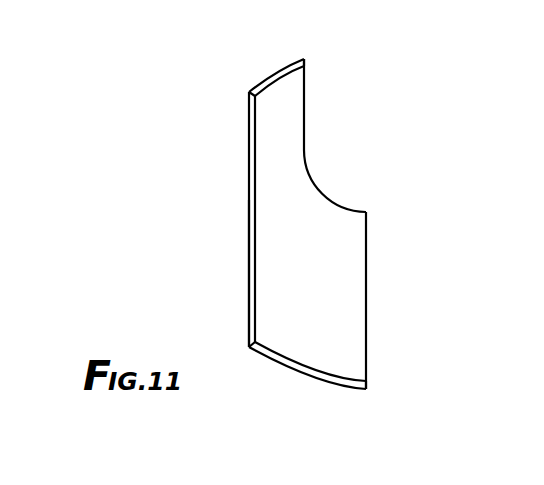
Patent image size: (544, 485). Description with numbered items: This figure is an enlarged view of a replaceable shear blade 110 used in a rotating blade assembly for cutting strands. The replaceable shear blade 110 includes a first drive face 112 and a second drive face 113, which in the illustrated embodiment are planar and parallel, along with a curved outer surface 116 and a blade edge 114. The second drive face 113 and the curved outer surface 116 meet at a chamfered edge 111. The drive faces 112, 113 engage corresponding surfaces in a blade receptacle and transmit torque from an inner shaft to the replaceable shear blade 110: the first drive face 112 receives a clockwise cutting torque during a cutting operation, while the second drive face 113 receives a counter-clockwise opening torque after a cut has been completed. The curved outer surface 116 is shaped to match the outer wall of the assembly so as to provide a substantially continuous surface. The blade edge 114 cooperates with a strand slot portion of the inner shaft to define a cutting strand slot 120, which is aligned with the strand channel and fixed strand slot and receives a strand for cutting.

The replaceable shear blade 110 is at (248, 140).
The chamfered edge 111 is at (248, 260).
The first drive face 112 is at (367, 327).
The second drive face 113 is at (248, 167).
The blade edge 114 is at (305, 110).
The curved outer surface 116 is at (269, 74).
The cutting strand slot 120 is at (375, 182).